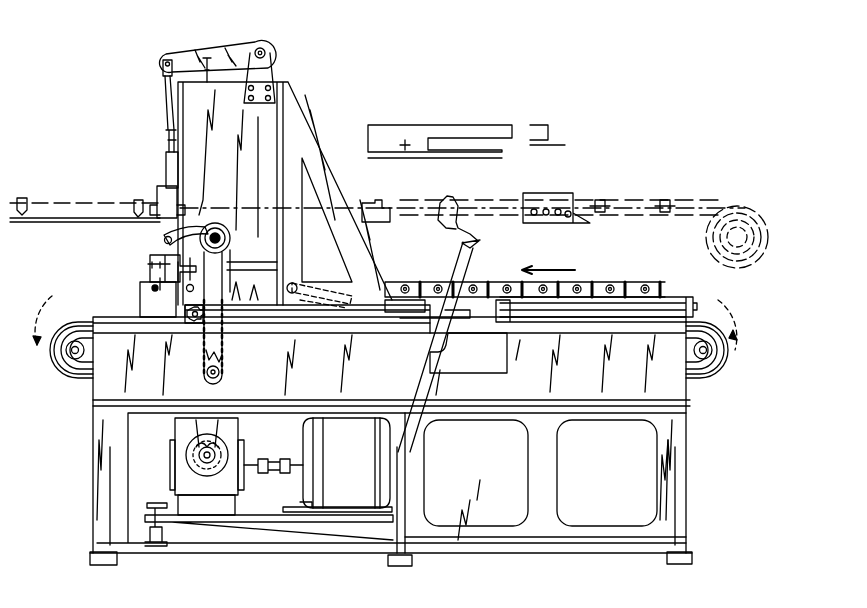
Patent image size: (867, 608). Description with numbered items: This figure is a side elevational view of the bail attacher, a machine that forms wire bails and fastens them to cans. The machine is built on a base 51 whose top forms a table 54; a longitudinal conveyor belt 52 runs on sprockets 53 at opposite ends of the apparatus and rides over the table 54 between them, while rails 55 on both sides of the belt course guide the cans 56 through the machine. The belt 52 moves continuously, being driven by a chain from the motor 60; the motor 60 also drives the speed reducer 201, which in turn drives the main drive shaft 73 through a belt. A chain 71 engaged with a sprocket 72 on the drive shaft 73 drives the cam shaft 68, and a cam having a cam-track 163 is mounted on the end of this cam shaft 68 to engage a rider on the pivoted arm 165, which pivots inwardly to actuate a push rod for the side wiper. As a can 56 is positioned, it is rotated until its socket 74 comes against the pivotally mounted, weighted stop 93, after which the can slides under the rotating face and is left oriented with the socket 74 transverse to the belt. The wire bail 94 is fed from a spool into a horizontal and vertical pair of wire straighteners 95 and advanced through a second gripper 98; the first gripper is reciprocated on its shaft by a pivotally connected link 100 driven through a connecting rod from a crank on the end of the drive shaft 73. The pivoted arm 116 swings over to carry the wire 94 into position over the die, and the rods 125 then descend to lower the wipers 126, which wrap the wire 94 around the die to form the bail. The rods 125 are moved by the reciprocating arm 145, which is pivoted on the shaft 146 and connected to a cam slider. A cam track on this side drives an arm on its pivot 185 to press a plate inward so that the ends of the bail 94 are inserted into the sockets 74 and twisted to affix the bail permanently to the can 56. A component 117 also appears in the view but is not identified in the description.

The base 51 is at (680, 430).
The conveyor belt 52 is at (76, 322).
The sprockets 53 is at (69, 380).
The table 54 is at (507, 322).
The rails 55 is at (662, 298).
The cans 56 is at (498, 300).
The motor 60 is at (305, 489).
The cam shaft 68 is at (231, 240).
The chain 71 is at (200, 333).
The sprocket 72 is at (224, 350).
The drive shaft 73 is at (220, 372).
The socket 74 is at (405, 286).
The stop 93 is at (330, 282).
The wire bail 94 is at (742, 205).
The wire straighteners 95 is at (548, 200).
The second gripper 98 is at (385, 203).
The link 100 is at (440, 368).
The pivoted arm 116 is at (58, 204).
The rod bracket 117 is at (20, 198).
The rods 125 is at (166, 100).
The wipers 126 is at (170, 170).
The reciprocating arm 145 is at (210, 48).
The shaft 146 is at (272, 50).
The cam-track 163 is at (224, 226).
The pivoted arm 165 is at (164, 238).
The pivot 185 is at (165, 254).
The speed reducer 201 is at (232, 436).